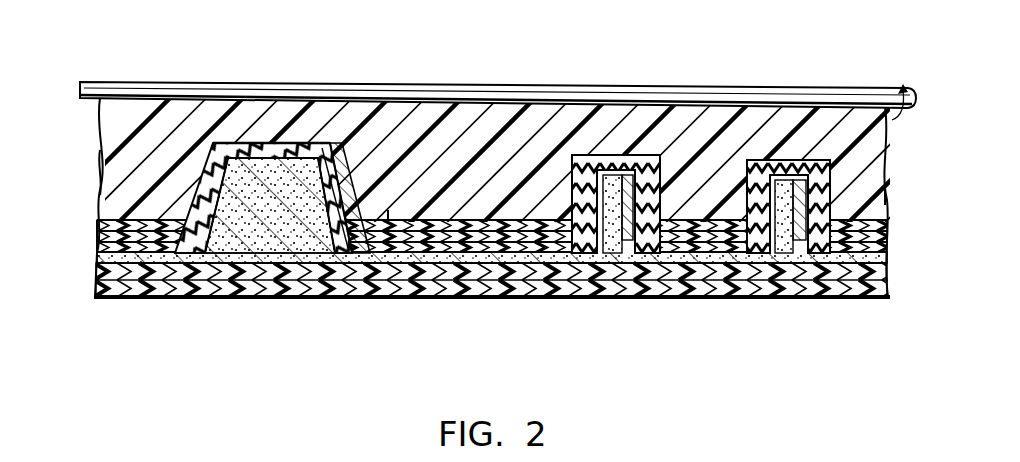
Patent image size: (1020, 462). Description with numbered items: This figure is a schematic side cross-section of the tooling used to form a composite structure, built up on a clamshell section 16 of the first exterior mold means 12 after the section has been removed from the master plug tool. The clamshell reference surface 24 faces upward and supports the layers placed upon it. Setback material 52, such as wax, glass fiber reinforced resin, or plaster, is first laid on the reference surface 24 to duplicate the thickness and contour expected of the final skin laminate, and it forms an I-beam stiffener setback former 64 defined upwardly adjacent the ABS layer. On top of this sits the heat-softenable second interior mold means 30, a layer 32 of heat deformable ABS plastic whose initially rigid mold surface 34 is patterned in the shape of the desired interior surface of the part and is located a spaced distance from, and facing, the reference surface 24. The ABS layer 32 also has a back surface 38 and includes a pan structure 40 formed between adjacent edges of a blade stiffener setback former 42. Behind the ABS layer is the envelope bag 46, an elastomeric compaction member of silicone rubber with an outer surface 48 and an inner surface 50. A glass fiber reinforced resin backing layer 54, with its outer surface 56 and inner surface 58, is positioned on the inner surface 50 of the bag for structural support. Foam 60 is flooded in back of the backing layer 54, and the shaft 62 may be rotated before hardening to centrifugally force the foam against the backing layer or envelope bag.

The first exterior mold means 12 is at (120, 310).
The clamshell section 16 is at (205, 298).
The clamshell reference surface 24 is at (821, 280).
The second interior mold means 30 is at (92, 247).
The layer of heat deformable ABS plastic 32 is at (345, 185).
The mold surface 34 is at (872, 198).
The back surface 38 is at (103, 172).
The pan structure 40 is at (655, 245).
The blade stiffener setback former 42 is at (614, 180).
The envelope bag 46 is at (262, 158).
The outer surface 48 is at (482, 230).
The inner surface 50 is at (503, 242).
The setback material 52 is at (884, 274).
The backing layer 54 is at (238, 135).
The outer surface 56 is at (296, 205).
The inner surface 58 is at (388, 218).
The foam 60 is at (857, 157).
The shaft 62 is at (815, 100).
The I-beam stiffener setback former 64 is at (305, 203).